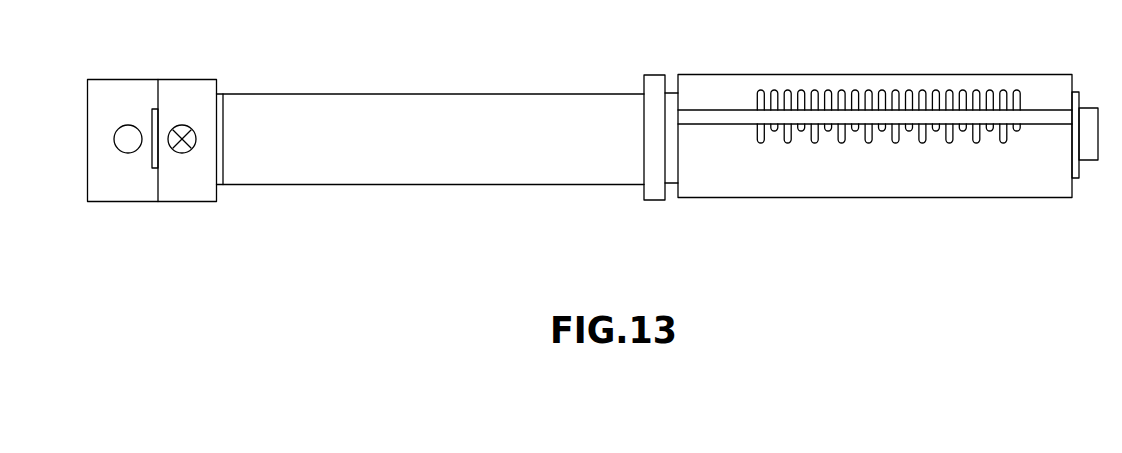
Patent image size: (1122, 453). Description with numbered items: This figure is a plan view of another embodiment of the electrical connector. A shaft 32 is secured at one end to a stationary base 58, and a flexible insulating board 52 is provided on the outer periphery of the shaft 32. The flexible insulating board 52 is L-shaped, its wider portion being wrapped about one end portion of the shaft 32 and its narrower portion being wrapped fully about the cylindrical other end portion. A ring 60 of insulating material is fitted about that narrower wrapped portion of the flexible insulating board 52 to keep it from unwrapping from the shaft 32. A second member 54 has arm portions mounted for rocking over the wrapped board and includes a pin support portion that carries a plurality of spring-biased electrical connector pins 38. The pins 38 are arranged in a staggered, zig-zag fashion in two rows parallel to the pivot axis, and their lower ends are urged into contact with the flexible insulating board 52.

The shaft 32 is at (155, 168).
The spring-biased electrical connector pins 38 is at (870, 143).
The flexible insulating board 52 is at (550, 175).
The second member 54 is at (978, 74).
The stationary base 58 is at (190, 193).
The ring 60 is at (650, 200).